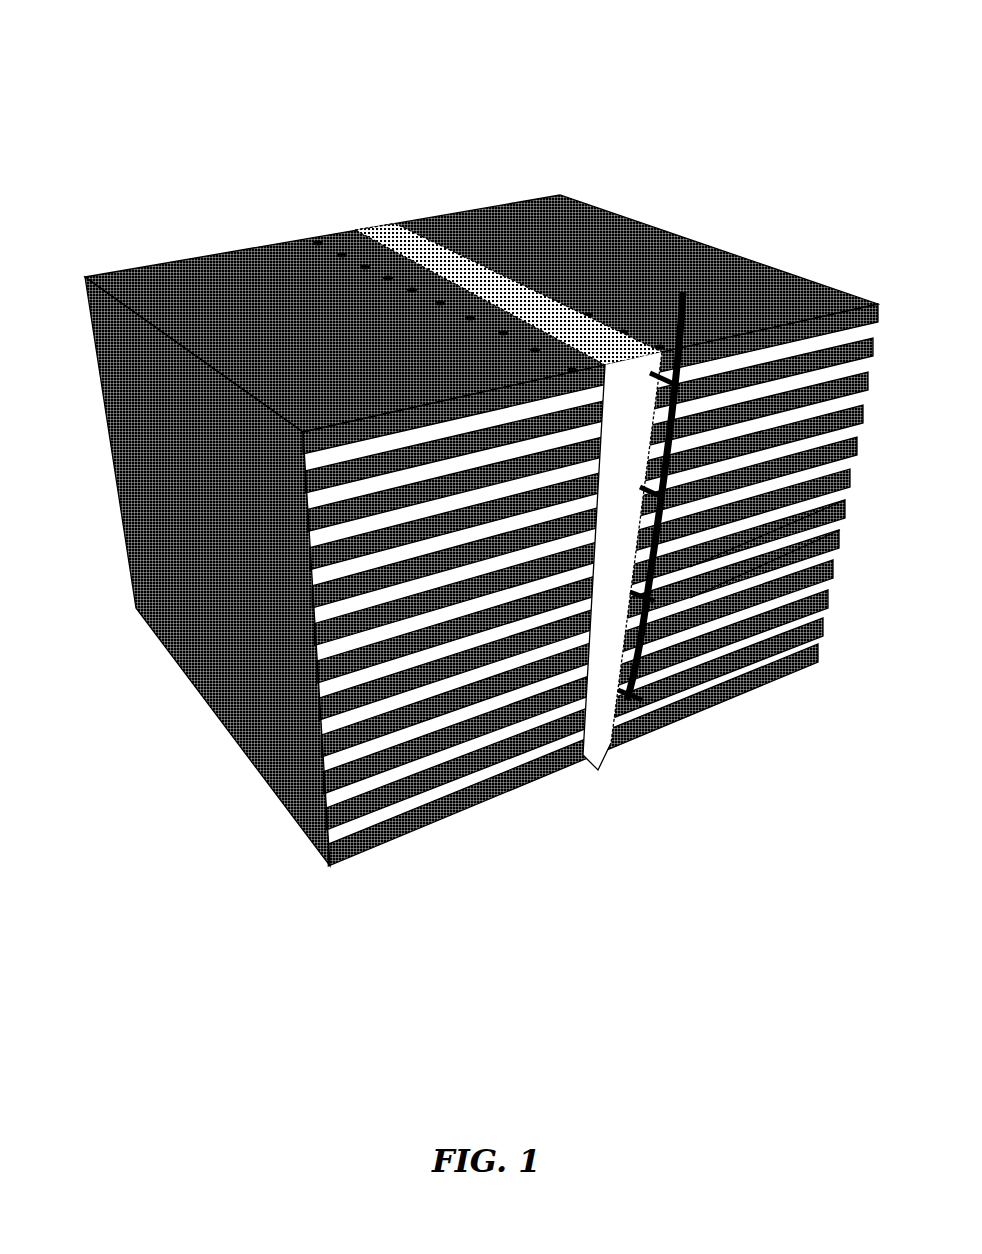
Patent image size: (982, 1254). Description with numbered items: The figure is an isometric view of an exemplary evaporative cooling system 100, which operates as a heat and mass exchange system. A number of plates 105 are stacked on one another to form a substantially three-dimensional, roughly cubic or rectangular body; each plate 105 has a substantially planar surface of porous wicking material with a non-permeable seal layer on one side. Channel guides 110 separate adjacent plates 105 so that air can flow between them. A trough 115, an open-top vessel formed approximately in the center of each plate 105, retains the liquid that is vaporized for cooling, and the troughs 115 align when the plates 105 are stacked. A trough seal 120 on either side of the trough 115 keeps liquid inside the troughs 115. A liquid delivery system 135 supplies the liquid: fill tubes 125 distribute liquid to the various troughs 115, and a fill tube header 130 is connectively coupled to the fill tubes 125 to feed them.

The evaporative cooling system 100 is at (461, 470).
The plate 105 is at (158, 276).
The channel guide 110 is at (404, 820).
The trough 115 is at (376, 240).
The trough seal 120 is at (597, 760).
The fill tube 125 is at (628, 700).
The fill tube header 130 is at (694, 280).
The liquid delivery system 135 is at (696, 560).